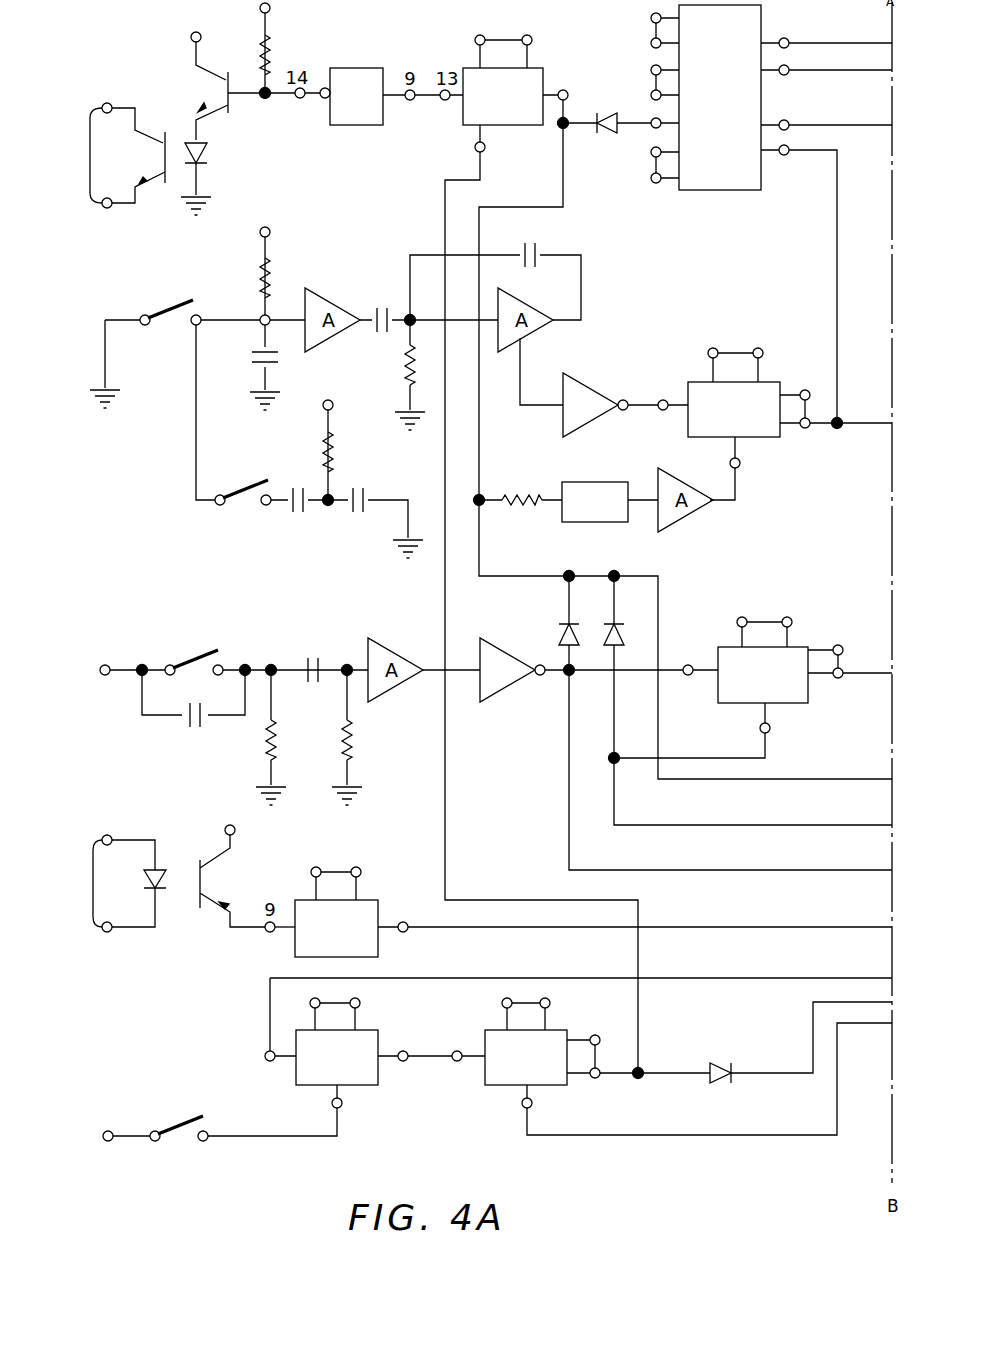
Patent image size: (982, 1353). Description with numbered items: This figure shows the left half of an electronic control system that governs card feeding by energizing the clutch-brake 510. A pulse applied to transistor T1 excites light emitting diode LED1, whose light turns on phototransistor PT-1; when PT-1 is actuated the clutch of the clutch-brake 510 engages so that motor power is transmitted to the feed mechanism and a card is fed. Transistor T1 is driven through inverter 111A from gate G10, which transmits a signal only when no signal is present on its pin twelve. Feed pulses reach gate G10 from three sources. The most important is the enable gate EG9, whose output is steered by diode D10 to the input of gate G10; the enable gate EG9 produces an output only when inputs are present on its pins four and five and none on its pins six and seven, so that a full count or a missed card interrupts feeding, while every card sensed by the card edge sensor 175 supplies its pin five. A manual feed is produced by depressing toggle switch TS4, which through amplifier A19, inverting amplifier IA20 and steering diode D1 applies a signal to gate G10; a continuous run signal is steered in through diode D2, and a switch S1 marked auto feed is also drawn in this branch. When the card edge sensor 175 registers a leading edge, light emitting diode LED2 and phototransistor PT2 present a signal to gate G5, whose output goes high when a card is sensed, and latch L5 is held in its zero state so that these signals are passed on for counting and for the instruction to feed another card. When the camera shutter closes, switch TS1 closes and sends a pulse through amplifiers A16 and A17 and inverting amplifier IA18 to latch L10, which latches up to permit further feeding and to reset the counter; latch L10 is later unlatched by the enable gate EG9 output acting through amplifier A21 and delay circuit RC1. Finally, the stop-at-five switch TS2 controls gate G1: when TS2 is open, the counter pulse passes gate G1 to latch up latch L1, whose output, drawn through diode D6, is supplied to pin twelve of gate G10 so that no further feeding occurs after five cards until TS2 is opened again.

The clutch-brake 510 is at (87, 155).
The phototransistor PT-1 is at (133, 155).
The transistor T1 is at (230, 105).
The light emitting diode LED1 is at (207, 152).
The inverter circuit 111A is at (356, 96).
The gate circuit G10 is at (668, 543).
The diode D10 is at (654, 128).
The gate circuit EG9 is at (740, 191).
The switch TS1 is at (162, 310).
The amplifier A16 is at (326, 300).
The amplifier A17 is at (526, 301).
The inverting amplifier IA18 is at (603, 397).
The latch circuit L10 is at (790, 413).
The delay circuit RC1 is at (592, 484).
The amplifier A21 is at (688, 522).
The auto feed switch S1 is at (245, 510).
The toggle switch TS4 is at (205, 620).
The amplifier A19 is at (408, 650).
The inverting amplifier IA20 is at (520, 683).
The steering diode D1 is at (560, 640).
The steering diode D2 is at (618, 640).
The latch circuit L5 is at (805, 668).
The card edge sensor 175 is at (93, 888).
The light emitting diode LED2 is at (166, 879).
The phototransistor PT2 is at (203, 888).
The gate circuit G5 is at (593, 901).
The gate circuit G1 is at (550, 1056).
The stop at five switch TS2 is at (178, 1142).
The latch circuit L1 is at (688, 1055).
The diode D6 is at (718, 1062).